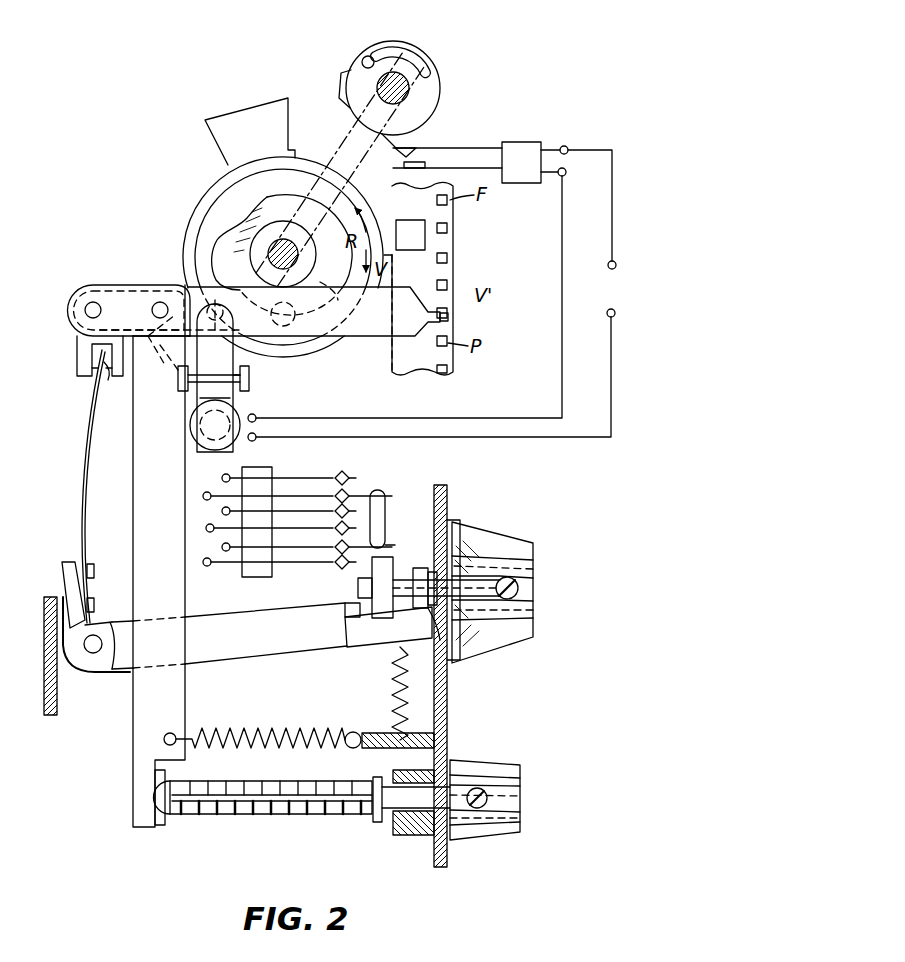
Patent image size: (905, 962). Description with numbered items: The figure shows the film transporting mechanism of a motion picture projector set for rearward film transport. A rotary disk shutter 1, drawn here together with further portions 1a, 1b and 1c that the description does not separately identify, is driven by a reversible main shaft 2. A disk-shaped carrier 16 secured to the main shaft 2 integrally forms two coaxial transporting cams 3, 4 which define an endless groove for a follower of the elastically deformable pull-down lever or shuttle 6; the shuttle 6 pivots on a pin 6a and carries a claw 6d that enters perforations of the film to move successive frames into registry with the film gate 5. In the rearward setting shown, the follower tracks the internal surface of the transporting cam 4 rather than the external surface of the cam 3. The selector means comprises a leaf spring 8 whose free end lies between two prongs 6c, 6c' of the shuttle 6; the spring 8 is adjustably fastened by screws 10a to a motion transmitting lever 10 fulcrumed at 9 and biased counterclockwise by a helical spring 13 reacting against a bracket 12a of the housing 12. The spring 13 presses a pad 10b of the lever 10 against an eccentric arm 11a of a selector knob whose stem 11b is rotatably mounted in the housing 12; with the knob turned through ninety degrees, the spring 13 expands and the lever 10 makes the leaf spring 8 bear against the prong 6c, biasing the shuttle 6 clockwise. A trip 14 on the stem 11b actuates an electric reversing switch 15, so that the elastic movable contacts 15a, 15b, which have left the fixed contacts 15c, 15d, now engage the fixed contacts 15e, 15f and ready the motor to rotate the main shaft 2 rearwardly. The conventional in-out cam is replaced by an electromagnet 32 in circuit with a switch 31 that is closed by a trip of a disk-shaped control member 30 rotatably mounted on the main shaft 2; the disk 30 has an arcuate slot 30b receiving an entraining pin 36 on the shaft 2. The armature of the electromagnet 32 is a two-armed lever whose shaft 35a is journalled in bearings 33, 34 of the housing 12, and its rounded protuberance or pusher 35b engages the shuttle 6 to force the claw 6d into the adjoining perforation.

The rotary disk shutter 1 is at (208, 178).
The film strip 1a is at (420, 285).
The pin 1b is at (246, 376).
The lobe of disc 1c is at (232, 118).
The main shaft 2 is at (316, 232).
The transporting cam 3 is at (312, 272).
The transporting cam 4 is at (332, 297).
The film gate 5 is at (412, 228).
The pull-down lever or shuttle 6 is at (362, 325).
The pin 6a is at (93, 302).
The prong 6c is at (76, 356).
The prong 6c' is at (69, 387).
The claw 6d is at (450, 318).
The leaf spring 8 is at (84, 456).
The fulcrum 9 is at (93, 654).
The motion transmitting lever 10 is at (128, 670).
The screws 10a is at (94, 572).
The pad 10b is at (358, 645).
The eccentric or arm 11a is at (436, 628).
The stem 11b is at (396, 580).
The housing 12 is at (452, 720).
The bracket 12a is at (392, 748).
The helical spring 13 is at (425, 690).
The actuating member or trip 14 is at (345, 608).
The electric reversing switch 15 is at (326, 474).
The movable contact 15a is at (366, 496).
The movable contact 15b is at (388, 548).
The fixed contact 15c is at (308, 478).
The fixed contact 15d is at (286, 528).
The fixed contact 15e is at (316, 511).
The fixed contact 15f is at (290, 565).
The disk-shaped carrier 16 is at (212, 213).
The disk-shaped control member 30 is at (428, 106).
The arcuate slot 30b is at (400, 56).
The switch 31 is at (468, 152).
The electromagnet 32 is at (205, 440).
The bearing 33 is at (178, 380).
The bearing 34 is at (249, 382).
The shaft 35a is at (198, 396).
The protuberance or pusher 35b is at (222, 300).
The entraining pin 36 is at (366, 56).